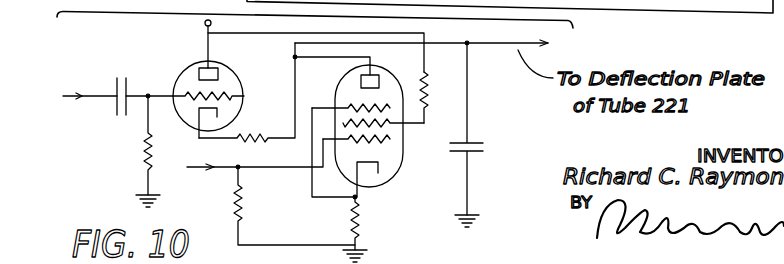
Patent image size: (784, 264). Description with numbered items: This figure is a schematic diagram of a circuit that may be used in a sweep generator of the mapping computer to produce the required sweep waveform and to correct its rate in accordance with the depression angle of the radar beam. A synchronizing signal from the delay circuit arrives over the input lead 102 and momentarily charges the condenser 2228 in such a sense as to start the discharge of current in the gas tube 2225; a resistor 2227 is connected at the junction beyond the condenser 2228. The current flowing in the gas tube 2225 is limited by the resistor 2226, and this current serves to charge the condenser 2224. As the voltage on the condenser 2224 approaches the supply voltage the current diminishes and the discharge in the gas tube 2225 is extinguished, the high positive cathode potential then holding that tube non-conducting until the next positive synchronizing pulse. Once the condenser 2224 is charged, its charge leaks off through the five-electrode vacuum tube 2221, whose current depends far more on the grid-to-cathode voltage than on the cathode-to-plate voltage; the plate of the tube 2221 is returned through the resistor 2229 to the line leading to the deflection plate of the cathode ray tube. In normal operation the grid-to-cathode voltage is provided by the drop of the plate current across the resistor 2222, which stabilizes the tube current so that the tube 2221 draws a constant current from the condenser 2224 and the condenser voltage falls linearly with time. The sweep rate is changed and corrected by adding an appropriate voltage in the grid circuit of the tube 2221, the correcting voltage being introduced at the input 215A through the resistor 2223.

The input signal lead 102 is at (92, 95).
The condenser 2228 is at (130, 84).
The gas tube 2225 is at (190, 65).
The resistor 2227 is at (140, 150).
The resistor 2226 is at (263, 148).
The input lead 215A is at (208, 170).
The resistor 2223 is at (243, 205).
The resistor 2222 is at (362, 229).
The vacuum tube 2221 is at (393, 155).
The plate load resistor 2229 is at (429, 90).
The condenser 2224 is at (477, 150).